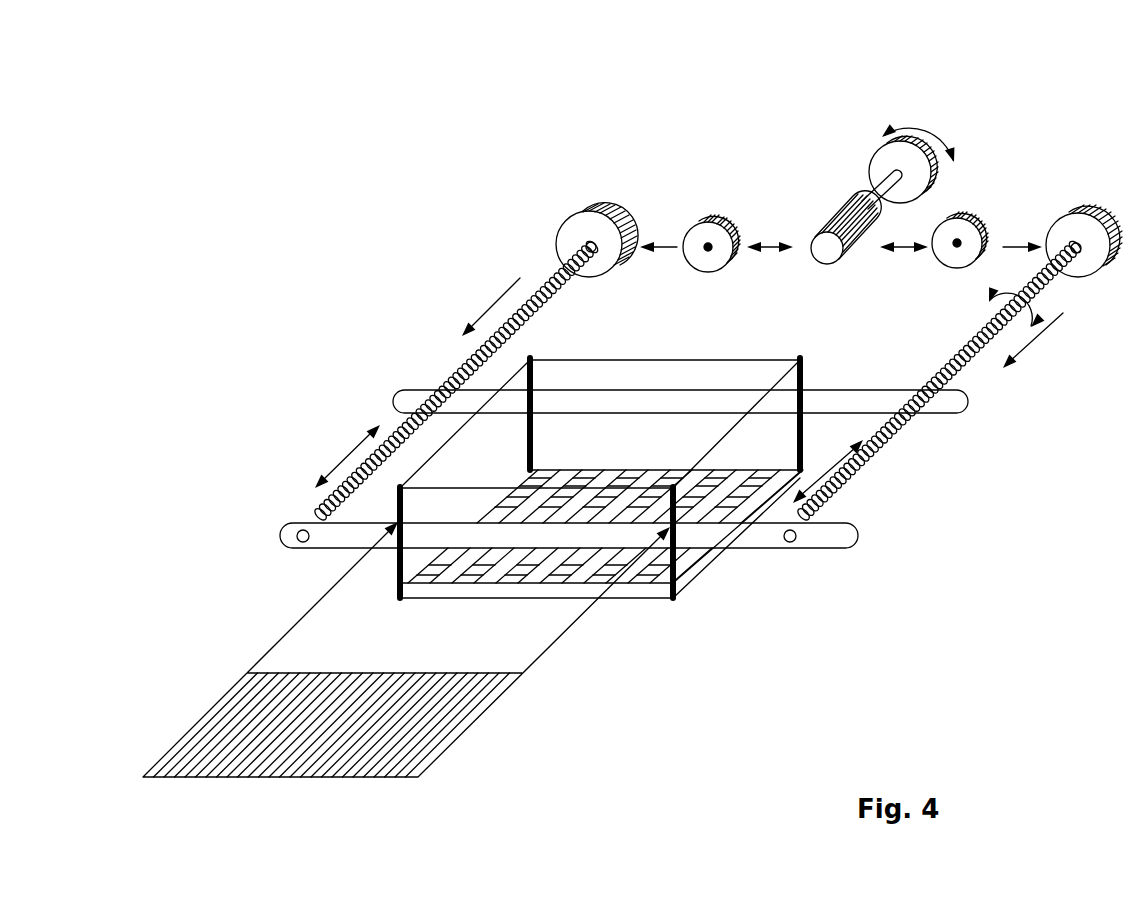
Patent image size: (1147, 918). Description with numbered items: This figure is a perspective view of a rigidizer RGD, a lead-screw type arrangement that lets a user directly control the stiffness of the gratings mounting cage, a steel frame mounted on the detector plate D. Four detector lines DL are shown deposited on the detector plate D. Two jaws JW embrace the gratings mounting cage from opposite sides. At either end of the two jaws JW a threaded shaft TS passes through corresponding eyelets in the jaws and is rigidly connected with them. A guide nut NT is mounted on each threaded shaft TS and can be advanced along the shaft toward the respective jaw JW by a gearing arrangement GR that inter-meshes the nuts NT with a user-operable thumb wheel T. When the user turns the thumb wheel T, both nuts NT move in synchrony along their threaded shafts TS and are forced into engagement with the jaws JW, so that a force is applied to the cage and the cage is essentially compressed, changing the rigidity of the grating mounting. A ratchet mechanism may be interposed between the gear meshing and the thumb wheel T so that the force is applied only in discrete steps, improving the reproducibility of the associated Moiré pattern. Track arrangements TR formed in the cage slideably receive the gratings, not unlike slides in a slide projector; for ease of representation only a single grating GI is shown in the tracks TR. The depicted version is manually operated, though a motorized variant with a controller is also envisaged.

The rigidizer RGD is at (1020, 114).
The guide nut NT is at (605, 204).
The gearing arrangement GR is at (720, 215).
The thumb wheel T is at (917, 122).
The threaded shaft TS is at (444, 384).
The track arrangement TR is at (533, 378).
The jaw JW is at (970, 405).
The detector plate D is at (656, 600).
The detector line DL is at (553, 569).
The grating GI is at (450, 745).